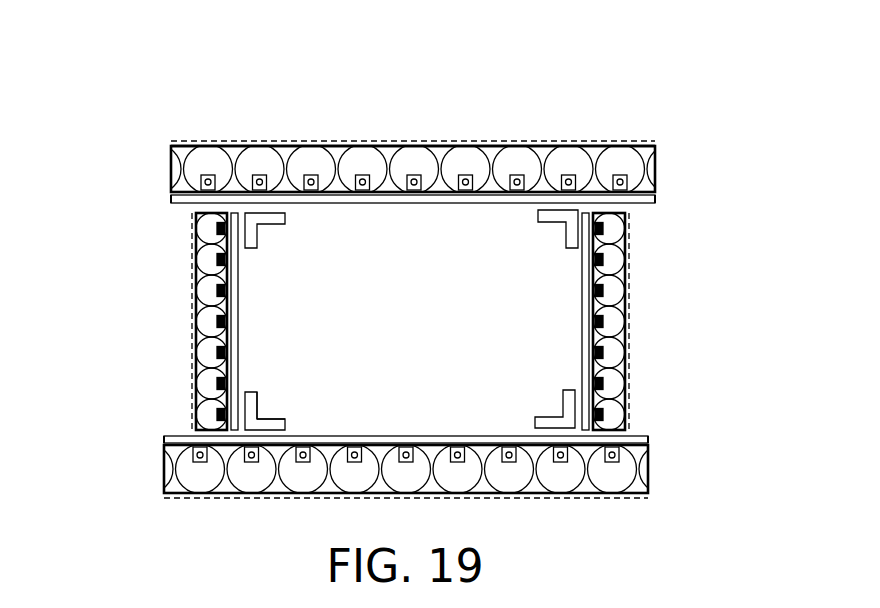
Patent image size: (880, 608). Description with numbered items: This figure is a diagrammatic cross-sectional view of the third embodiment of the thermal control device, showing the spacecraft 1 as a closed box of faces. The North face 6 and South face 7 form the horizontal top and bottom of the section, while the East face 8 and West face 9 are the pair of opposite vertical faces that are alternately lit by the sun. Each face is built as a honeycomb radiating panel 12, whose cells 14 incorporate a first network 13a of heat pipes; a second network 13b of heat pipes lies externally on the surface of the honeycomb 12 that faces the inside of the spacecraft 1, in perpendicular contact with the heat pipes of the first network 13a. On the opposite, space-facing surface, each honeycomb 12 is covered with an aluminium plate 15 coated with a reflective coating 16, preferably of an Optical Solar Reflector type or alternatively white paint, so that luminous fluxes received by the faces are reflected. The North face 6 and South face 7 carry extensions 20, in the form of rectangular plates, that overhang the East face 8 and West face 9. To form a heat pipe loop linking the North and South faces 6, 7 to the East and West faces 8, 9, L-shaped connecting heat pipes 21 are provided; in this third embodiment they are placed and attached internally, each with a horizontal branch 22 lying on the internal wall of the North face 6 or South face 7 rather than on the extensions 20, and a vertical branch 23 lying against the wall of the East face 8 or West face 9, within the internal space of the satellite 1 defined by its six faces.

The spacecraft 1 is at (626, 115).
The North face 6 is at (424, 203).
The South face 7 is at (466, 436).
The East face 8 is at (582, 298).
The West face 9 is at (238, 328).
The honeycomb radiating panel 12 is at (650, 163).
The first network of heat pipes 13a is at (518, 176).
The second network of heat pipes 13b is at (655, 197).
The cells 14 is at (393, 146).
The aluminium plate 15 is at (260, 146).
The reflective coating 16 is at (292, 140).
The extensions 20 is at (171, 197).
The connecting heat pipes 21 is at (266, 412).
The horizontal branch 22 is at (282, 422).
The vertical branch 23 is at (257, 394).